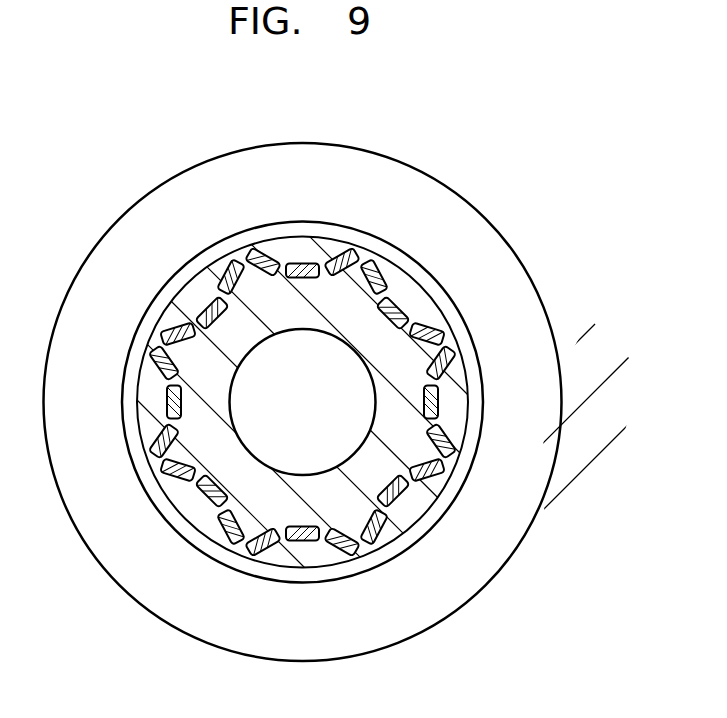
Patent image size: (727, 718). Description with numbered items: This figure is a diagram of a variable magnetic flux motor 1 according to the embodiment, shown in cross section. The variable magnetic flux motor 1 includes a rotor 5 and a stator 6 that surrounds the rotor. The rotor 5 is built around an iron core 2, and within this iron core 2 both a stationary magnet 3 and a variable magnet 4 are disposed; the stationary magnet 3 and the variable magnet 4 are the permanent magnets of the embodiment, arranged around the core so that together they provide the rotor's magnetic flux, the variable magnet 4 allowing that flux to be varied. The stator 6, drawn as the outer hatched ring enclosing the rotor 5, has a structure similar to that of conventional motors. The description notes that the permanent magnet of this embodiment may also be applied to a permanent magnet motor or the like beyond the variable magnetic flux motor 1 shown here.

The variable magnetic flux motor 1 is at (493, 151).
The iron core 2 is at (465, 328).
The stationary magnet 3 is at (455, 361).
The variable magnet 4 is at (460, 388).
The rotor 5 is at (355, 400).
The stator 6 is at (548, 487).